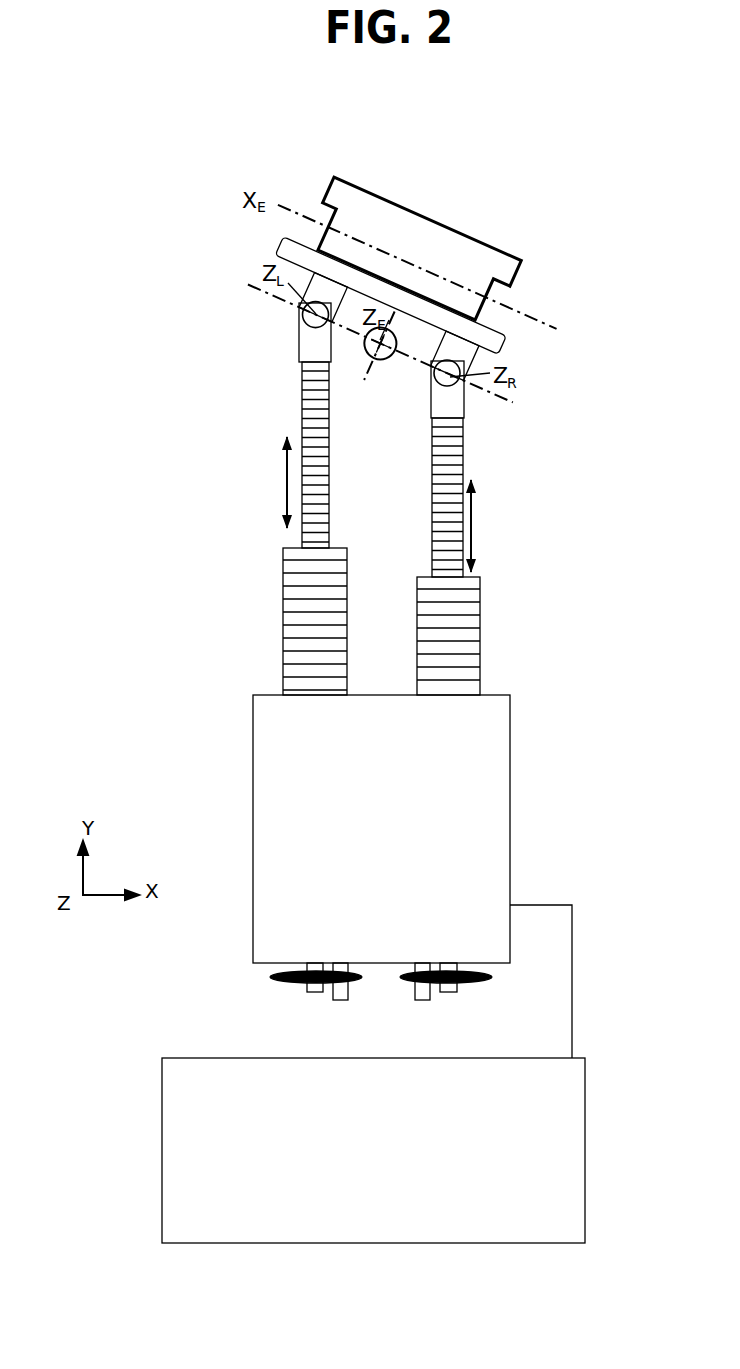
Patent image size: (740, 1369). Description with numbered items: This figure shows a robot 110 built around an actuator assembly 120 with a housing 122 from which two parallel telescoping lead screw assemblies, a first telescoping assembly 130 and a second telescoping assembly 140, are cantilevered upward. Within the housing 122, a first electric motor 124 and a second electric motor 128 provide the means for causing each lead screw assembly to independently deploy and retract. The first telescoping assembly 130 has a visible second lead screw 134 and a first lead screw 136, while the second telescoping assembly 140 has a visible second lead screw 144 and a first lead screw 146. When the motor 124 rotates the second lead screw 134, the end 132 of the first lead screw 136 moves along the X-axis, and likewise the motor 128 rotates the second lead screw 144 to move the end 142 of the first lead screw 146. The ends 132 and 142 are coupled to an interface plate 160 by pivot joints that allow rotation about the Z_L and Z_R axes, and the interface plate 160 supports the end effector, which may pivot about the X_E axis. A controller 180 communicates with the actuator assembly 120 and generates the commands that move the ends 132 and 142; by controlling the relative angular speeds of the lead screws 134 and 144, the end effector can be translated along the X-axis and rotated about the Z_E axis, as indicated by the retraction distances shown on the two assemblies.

The robot 110 is at (123, 164).
The actuator assembly 120 is at (393, 869).
The housing 122 is at (337, 829).
The first electric motor 124 is at (306, 1001).
The second electric motor 128 is at (450, 1003).
The first telescoping lead screw assembly 130 is at (262, 484).
The end of first lead screw 132 is at (285, 317).
The second lead screw 134 is at (271, 616).
The first lead screw 136 is at (266, 455).
The second telescoping lead screw assembly 140 is at (465, 513).
The end of first lead screw 142 is at (417, 374).
The second lead screw 144 is at (494, 632).
The first lead screw 146 is at (490, 497).
The interface plate 160 is at (507, 346).
The controller 180 is at (322, 1150).